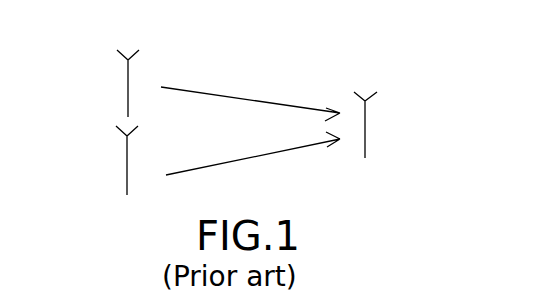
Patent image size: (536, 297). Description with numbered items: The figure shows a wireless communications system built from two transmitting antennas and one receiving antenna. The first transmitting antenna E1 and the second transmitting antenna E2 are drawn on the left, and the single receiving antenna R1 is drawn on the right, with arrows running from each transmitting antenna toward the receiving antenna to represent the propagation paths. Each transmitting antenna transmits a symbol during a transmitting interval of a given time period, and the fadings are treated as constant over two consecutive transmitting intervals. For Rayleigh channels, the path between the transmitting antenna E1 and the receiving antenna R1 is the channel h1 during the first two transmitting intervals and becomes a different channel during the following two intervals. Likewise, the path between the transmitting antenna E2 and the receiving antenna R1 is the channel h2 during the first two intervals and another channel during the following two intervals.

The transmitting antenna E1 is at (128, 97).
The transmitting antenna E2 is at (127, 178).
The receiving antenna R1 is at (365, 128).
The channel h1 is at (250, 95).
The channel h2 is at (253, 153).